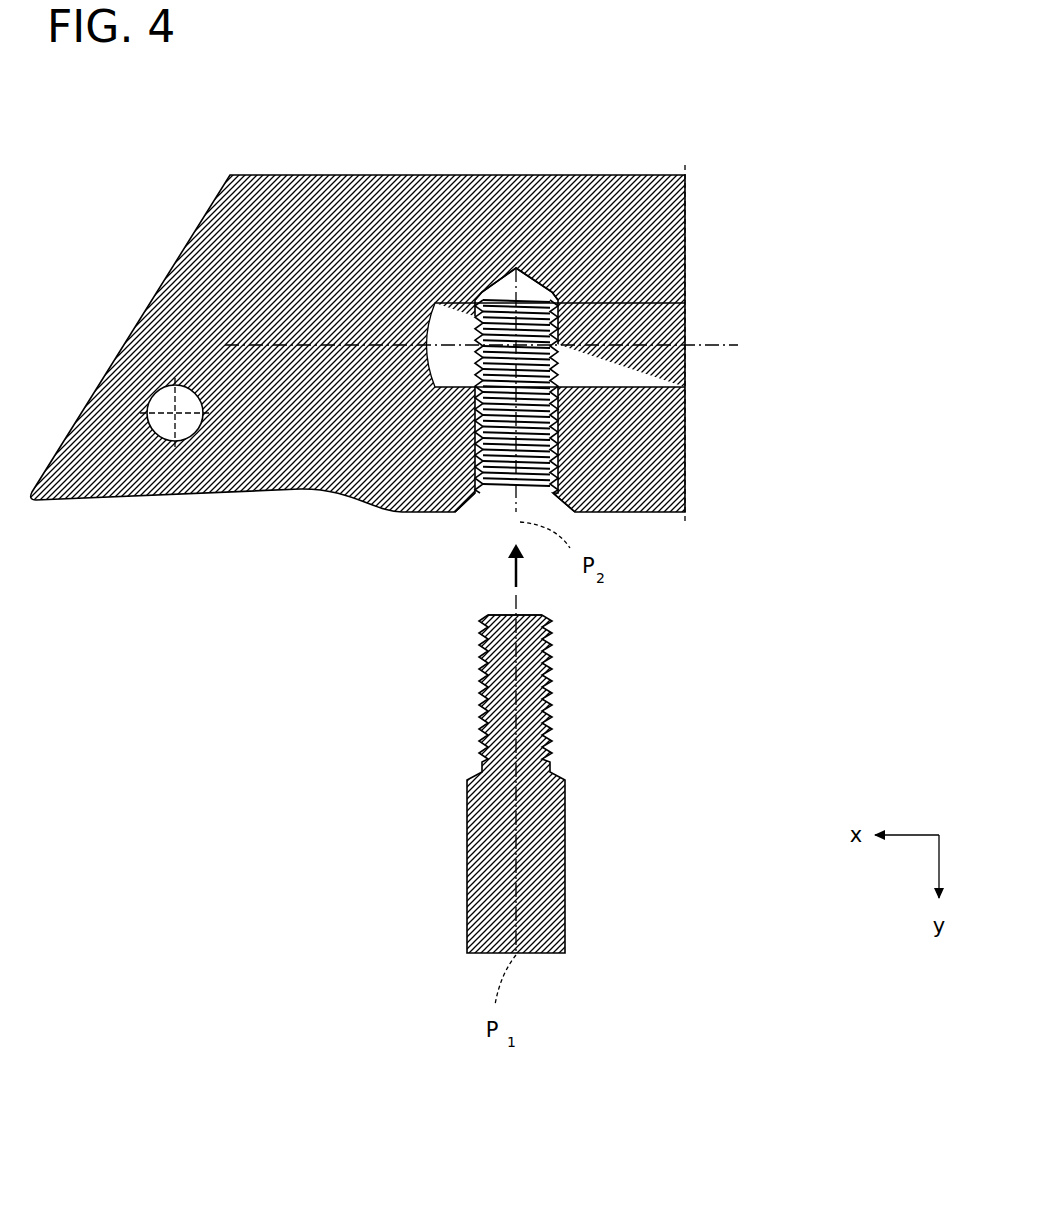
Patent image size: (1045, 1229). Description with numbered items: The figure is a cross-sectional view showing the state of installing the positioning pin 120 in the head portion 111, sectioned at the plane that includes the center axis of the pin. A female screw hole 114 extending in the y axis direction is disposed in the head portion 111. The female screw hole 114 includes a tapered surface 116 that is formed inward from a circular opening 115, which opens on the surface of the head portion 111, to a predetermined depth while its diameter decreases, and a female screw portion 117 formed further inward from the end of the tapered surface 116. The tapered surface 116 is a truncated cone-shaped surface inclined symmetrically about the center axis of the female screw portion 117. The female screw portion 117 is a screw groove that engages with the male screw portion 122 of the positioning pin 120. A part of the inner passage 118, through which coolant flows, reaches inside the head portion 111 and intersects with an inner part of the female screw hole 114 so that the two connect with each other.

The head portion 111 is at (279, 114).
The female screw hole 114 is at (494, 535).
The circular opening 115 is at (562, 517).
The tapered surface 116 is at (475, 507).
The female screw portion 117 is at (570, 293).
The inner passage 118 is at (672, 320).
The positioning pin 120 is at (467, 827).
The male screw portion 122 is at (577, 618).